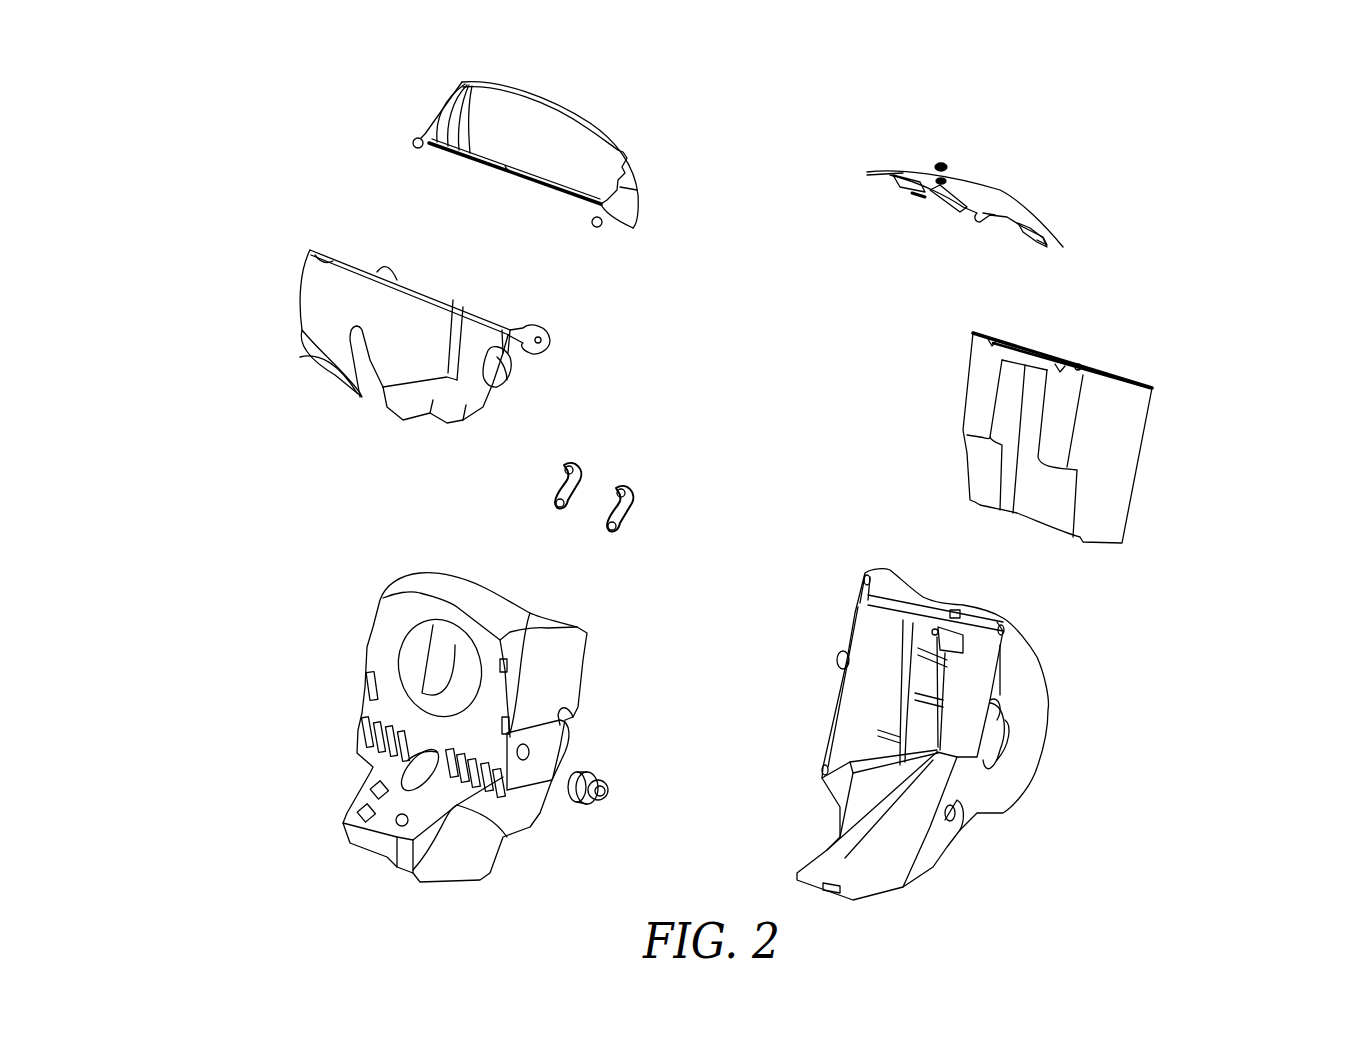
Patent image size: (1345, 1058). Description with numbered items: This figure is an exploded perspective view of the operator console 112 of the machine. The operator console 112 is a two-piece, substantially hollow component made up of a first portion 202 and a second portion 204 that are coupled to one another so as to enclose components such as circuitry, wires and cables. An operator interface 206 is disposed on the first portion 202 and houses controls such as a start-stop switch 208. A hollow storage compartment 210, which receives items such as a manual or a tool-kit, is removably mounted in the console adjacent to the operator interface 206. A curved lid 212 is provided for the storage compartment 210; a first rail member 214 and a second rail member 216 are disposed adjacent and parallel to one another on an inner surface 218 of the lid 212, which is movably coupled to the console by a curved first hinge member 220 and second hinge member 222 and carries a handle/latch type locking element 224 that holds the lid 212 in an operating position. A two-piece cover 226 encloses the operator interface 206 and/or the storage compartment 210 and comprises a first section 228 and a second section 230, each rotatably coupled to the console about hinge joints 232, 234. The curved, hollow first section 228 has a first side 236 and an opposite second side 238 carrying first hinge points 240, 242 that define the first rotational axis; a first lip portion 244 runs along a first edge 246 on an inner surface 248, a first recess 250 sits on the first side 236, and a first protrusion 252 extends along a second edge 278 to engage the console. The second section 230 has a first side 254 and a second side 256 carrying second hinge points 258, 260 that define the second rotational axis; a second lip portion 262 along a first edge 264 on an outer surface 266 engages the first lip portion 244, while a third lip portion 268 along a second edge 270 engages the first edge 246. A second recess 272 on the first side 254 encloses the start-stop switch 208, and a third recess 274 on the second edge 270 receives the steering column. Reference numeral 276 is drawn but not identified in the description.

The operator console 112 is at (1245, 150).
The first portion 202 is at (599, 648).
The second portion 204 is at (1067, 665).
The operator interface 206 is at (413, 715).
The start-stop switch 208 is at (612, 783).
The storage compartment 210 is at (1115, 445).
The lid 212 is at (987, 200).
The first rail member 214 is at (890, 176).
The second rail member 216 is at (1017, 233).
The inner surface 218 is at (990, 218).
The first hinge member 220 is at (598, 478).
The second hinge member 222 is at (650, 500).
The locking element 224 is at (942, 164).
The cover 226 is at (635, 97).
The first section 228 is at (645, 150).
The second section 230 is at (287, 303).
The hinge joint 232 is at (562, 721).
The hinge joint 234 is at (428, 690).
The first side 236 is at (650, 206).
The second side 238 is at (428, 97).
The first hinge point 240 is at (596, 228).
The first hinge point 242 is at (412, 146).
The first lip portion 244 is at (519, 100).
The first edge 246 is at (560, 100).
The inner surface 248 is at (553, 149).
The first recess 250 is at (637, 193).
The first protrusion 252 is at (432, 112).
The first side 254 is at (487, 410).
The second side 256 is at (294, 268).
The second hinge point 258 is at (548, 341).
The second hinge point 260 is at (384, 268).
The second lip portion 262 is at (322, 252).
The first edge 264 is at (415, 280).
The outer surface 266 is at (407, 328).
The third lip portion 268 is at (427, 420).
The second edge 270 is at (300, 357).
The second recess 272 is at (503, 373).
The third recess 274 is at (376, 395).
The rib 276 is at (852, 625).
The second edge 278 is at (510, 175).